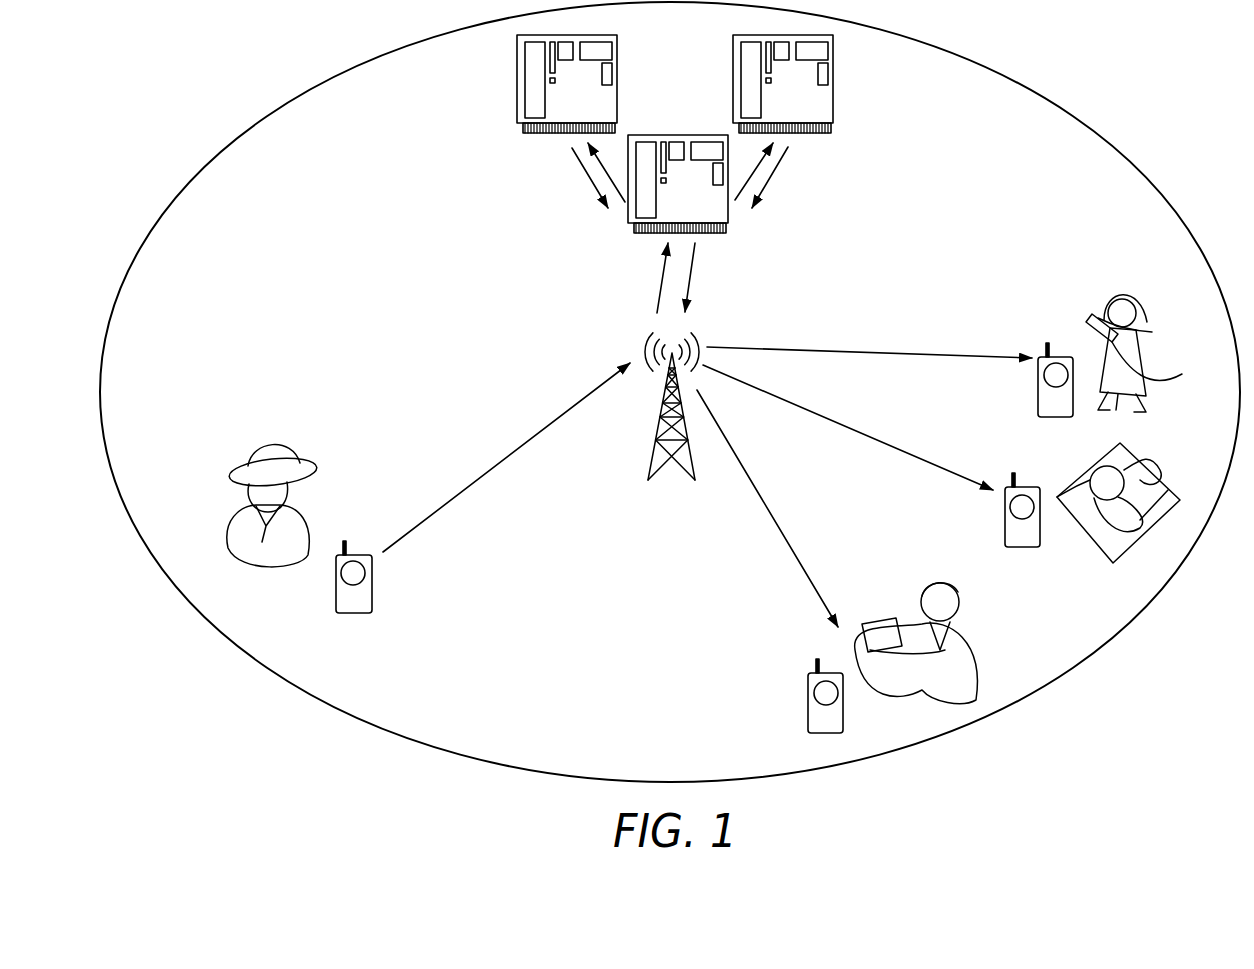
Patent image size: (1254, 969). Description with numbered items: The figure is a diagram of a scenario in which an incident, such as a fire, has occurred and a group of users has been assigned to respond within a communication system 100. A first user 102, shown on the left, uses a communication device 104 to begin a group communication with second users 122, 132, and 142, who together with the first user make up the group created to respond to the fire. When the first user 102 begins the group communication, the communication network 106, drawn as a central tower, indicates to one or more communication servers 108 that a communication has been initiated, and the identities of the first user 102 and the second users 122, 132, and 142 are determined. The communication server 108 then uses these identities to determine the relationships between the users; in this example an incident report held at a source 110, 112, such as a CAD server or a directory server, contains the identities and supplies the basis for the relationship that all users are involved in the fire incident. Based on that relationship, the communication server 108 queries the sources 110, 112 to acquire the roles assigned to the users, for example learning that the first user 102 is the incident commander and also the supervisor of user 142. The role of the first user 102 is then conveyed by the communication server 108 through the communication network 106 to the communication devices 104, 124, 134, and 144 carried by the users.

The communication system 100 is at (1042, 148).
The first user 102 is at (282, 446).
The communication device 104 is at (374, 581).
The communication network 106 is at (648, 476).
The communication server 108 is at (680, 135).
The source 110 is at (517, 81).
The source 112 is at (833, 81).
The second user 122 is at (1130, 292).
The communication device 124 is at (1038, 386).
The second user 132 is at (1105, 556).
The communication device 134 is at (1005, 516).
The second user 142 is at (938, 584).
The communication device 144 is at (808, 704).